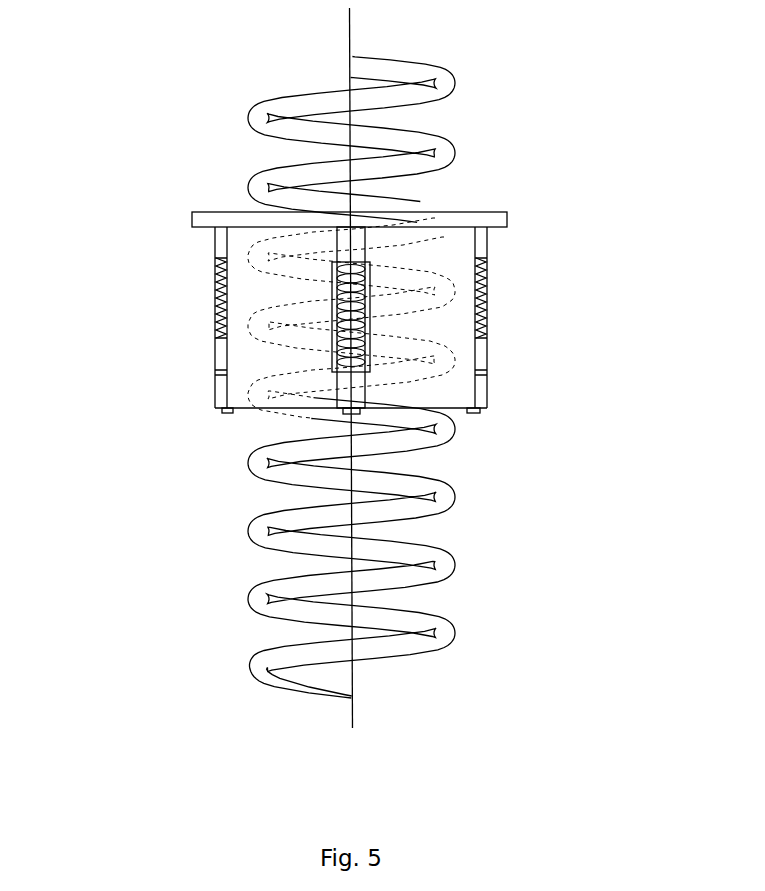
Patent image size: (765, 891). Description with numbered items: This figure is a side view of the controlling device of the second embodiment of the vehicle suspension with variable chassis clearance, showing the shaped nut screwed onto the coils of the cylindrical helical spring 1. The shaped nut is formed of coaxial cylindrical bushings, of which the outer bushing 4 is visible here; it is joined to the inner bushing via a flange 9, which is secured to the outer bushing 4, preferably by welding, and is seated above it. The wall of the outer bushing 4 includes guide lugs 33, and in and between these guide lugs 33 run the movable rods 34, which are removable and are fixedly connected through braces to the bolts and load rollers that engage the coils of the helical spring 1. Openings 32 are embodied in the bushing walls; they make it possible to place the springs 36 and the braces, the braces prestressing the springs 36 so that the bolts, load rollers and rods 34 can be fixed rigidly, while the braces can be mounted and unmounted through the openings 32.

The cylindrical helical spring 1 is at (426, 92).
The flange 9 is at (497, 216).
The outer bushing 4 is at (258, 359).
The openings 32 is at (332, 290).
The guide lugs 33 is at (353, 398).
The movable rods 34 is at (475, 409).
The springs 36 is at (483, 317).